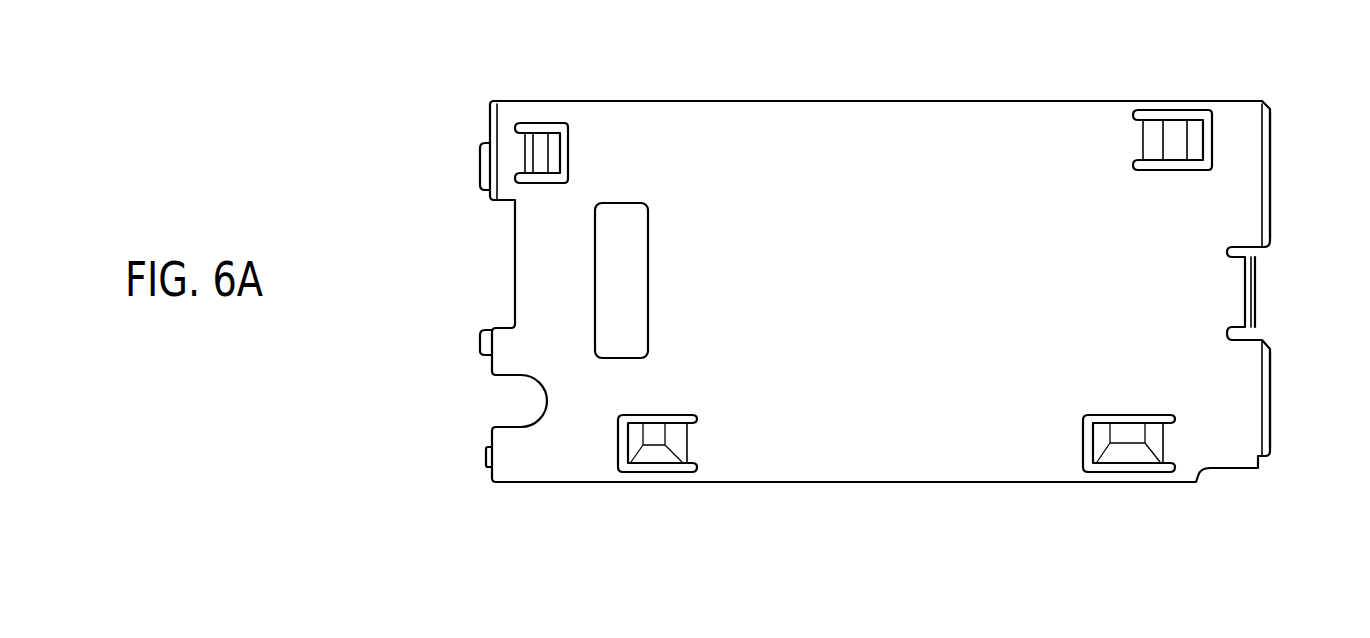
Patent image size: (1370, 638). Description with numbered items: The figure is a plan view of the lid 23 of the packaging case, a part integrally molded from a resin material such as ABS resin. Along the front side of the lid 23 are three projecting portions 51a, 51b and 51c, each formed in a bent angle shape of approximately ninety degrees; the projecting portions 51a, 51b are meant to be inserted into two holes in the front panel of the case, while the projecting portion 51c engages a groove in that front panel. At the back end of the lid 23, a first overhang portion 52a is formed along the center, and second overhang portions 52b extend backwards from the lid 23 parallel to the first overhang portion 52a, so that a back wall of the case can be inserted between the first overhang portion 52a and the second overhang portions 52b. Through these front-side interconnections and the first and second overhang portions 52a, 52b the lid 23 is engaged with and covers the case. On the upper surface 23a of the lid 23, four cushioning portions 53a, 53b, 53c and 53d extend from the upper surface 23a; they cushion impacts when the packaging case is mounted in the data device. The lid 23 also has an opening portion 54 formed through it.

The lid 23 is at (912, 68).
The upper surface 23a is at (1037, 124).
The projecting portion 51a is at (489, 170).
The projecting portion 51b is at (488, 340).
The projecting portion 51c is at (490, 452).
The first overhang portion 52a is at (1256, 290).
The second overhang portion 52b is at (1272, 180).
The cushioning portion 53a is at (656, 442).
The cushioning portion 53b is at (1127, 442).
The cushioning portion 53c is at (540, 142).
The cushioning portion 53d is at (1173, 132).
The opening portion 54 is at (644, 298).